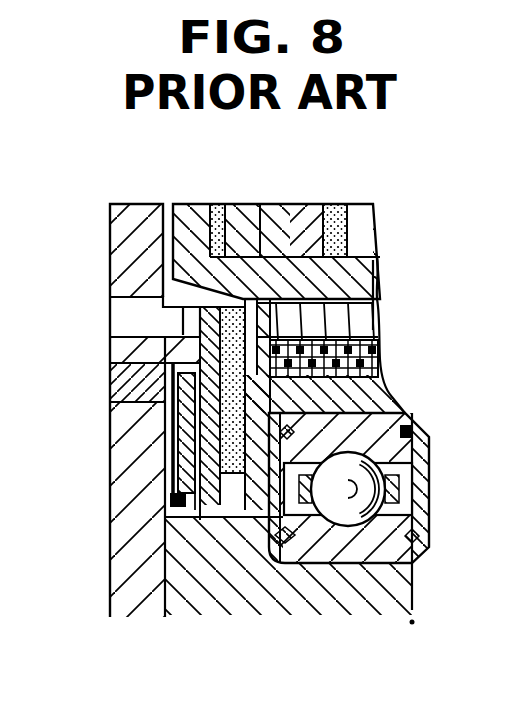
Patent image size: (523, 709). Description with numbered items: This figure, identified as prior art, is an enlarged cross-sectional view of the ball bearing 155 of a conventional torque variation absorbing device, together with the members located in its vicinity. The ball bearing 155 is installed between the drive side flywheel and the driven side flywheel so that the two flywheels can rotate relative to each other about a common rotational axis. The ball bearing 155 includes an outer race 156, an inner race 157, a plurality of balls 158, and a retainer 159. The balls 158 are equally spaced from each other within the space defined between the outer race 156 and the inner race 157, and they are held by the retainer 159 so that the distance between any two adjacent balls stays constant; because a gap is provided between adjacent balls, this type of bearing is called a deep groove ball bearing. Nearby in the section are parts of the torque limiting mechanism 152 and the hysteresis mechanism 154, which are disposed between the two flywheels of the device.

The torque limiting mechanism 152 is at (384, 243).
The hysteresis mechanism 154 is at (148, 460).
The ball bearing 155 is at (338, 542).
The outer race 156 is at (322, 511).
The inner race 157 is at (381, 555).
The balls 158 is at (340, 564).
The retainer 159 is at (270, 505).